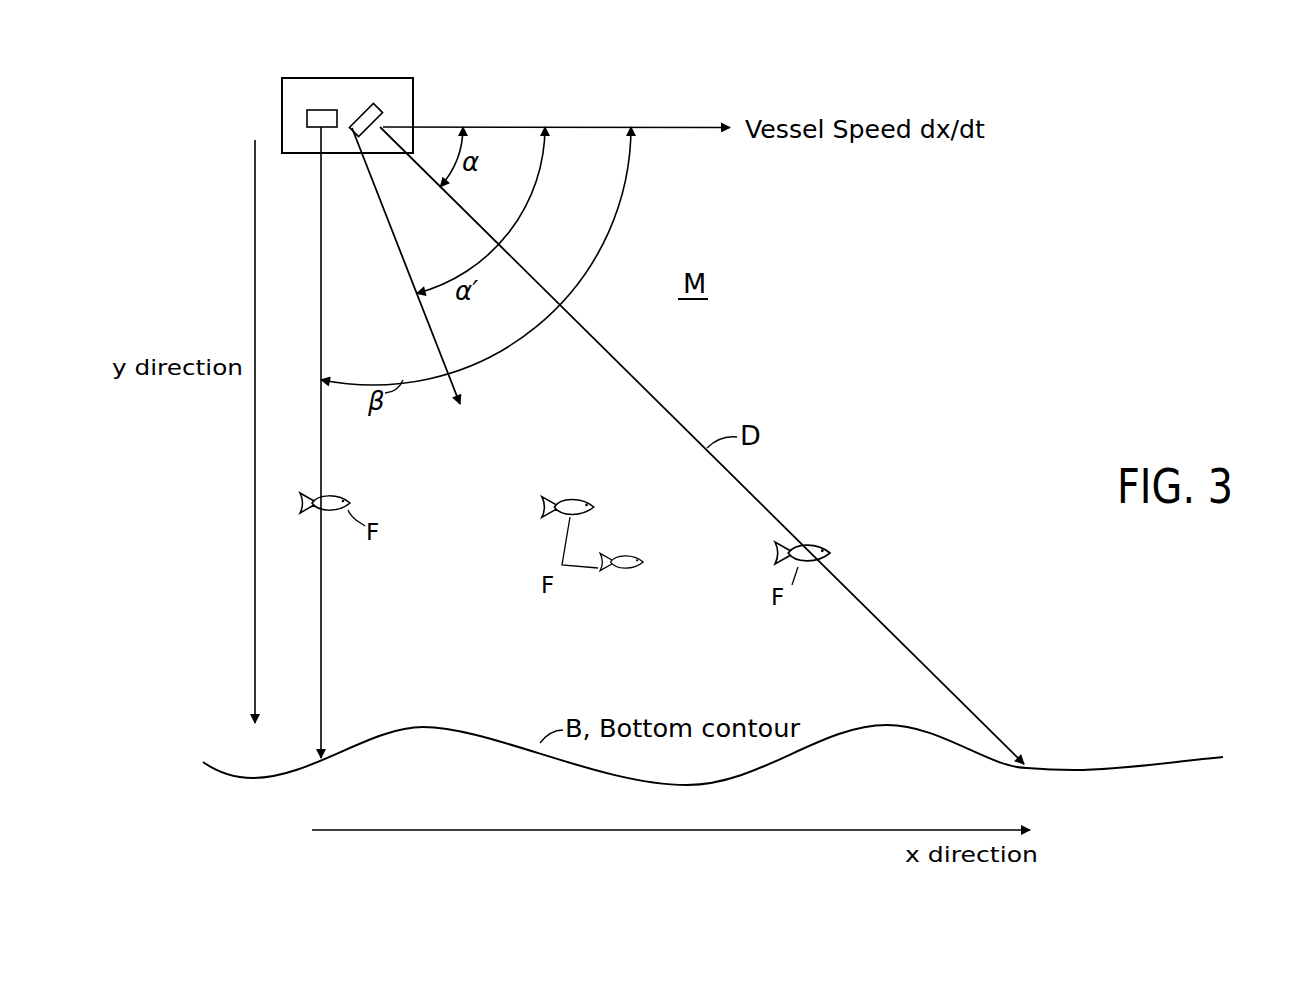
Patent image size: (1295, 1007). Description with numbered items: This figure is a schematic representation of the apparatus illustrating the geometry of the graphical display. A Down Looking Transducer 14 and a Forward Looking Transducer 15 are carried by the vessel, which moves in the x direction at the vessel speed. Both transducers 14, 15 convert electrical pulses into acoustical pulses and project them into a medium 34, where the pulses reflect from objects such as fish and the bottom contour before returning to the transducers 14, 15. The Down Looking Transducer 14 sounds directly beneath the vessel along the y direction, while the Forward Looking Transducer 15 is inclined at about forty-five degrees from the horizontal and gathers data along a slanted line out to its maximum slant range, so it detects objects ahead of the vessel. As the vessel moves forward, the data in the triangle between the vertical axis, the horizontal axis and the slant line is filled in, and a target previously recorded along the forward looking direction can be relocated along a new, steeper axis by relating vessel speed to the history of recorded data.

The Down Looking Transducer 14 is at (317, 120).
The Forward Looking Transducer 15 is at (373, 117).
The medium 34 is at (282, 100).